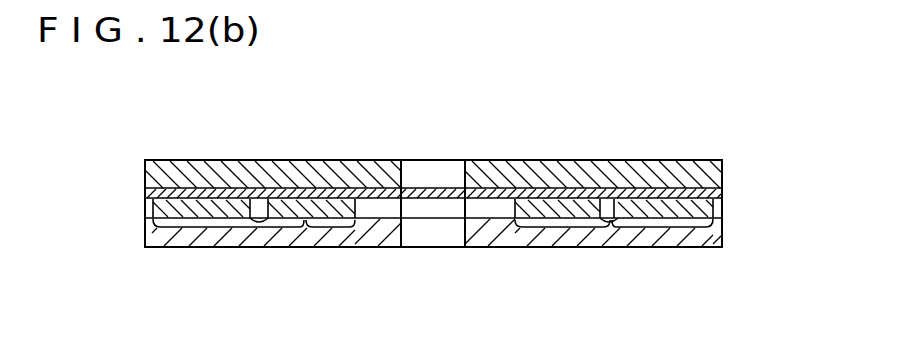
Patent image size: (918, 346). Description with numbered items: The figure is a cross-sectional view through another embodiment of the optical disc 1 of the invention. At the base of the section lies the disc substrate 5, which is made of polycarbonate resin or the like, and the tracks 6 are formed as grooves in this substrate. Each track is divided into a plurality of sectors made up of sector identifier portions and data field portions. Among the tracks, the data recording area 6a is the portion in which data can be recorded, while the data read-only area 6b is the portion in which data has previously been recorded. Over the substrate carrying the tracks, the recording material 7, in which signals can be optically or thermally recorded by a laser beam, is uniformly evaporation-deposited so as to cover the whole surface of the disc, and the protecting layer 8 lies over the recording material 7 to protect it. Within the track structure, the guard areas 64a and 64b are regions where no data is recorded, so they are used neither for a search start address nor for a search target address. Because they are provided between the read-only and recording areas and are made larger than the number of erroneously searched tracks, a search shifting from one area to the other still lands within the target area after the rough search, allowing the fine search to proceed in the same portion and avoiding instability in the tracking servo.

The optical disc 1 is at (724, 165).
The disc substrate 5 is at (606, 235).
The tracks 6 is at (722, 210).
The data recording area 6a is at (212, 228).
The data read-only area 6b is at (304, 228).
The recording material 7 is at (488, 193).
The protecting layer 8 is at (420, 168).
The guard area 64a is at (265, 212).
The guard area 64b is at (253, 212).